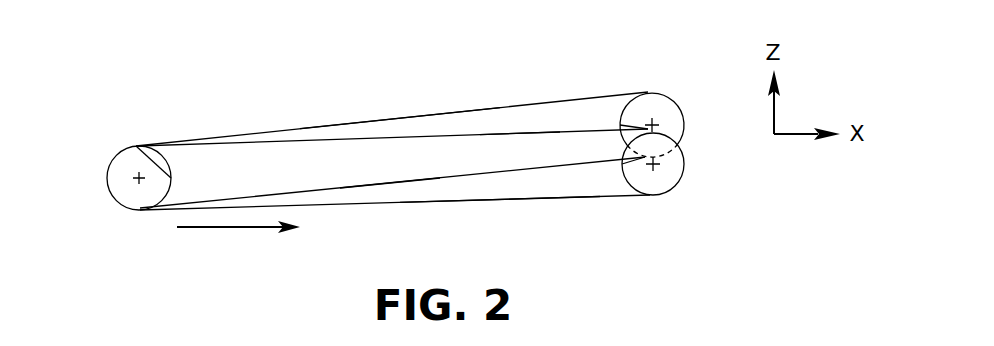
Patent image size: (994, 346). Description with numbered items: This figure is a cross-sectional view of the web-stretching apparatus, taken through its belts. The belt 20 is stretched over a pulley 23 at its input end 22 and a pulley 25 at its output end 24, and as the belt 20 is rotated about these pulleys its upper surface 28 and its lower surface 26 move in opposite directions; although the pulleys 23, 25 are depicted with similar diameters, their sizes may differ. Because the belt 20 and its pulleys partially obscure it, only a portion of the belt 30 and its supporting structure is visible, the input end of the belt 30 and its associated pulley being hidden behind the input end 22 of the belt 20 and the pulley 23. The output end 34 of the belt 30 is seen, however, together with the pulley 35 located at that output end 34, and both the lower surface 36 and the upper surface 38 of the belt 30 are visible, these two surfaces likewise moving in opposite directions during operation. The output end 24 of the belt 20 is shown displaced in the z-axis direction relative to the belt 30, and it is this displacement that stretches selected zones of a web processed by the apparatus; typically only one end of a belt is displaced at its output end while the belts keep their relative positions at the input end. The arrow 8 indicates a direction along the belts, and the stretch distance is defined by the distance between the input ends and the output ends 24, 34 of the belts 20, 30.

The direction of belt travel 8 is at (238, 232).
The belt 20 is at (283, 128).
The input end 22 is at (107, 168).
The pulley 23 is at (171, 172).
The output end 24 is at (676, 104).
The pulley 25 is at (620, 122).
The lower surface 26 is at (390, 184).
The upper surface 28 is at (370, 121).
The belt 30 is at (452, 199).
The output end 34 is at (686, 166).
The pulley 35 is at (619, 178).
The lower surface 36 is at (538, 197).
The upper surface 38 is at (532, 133).